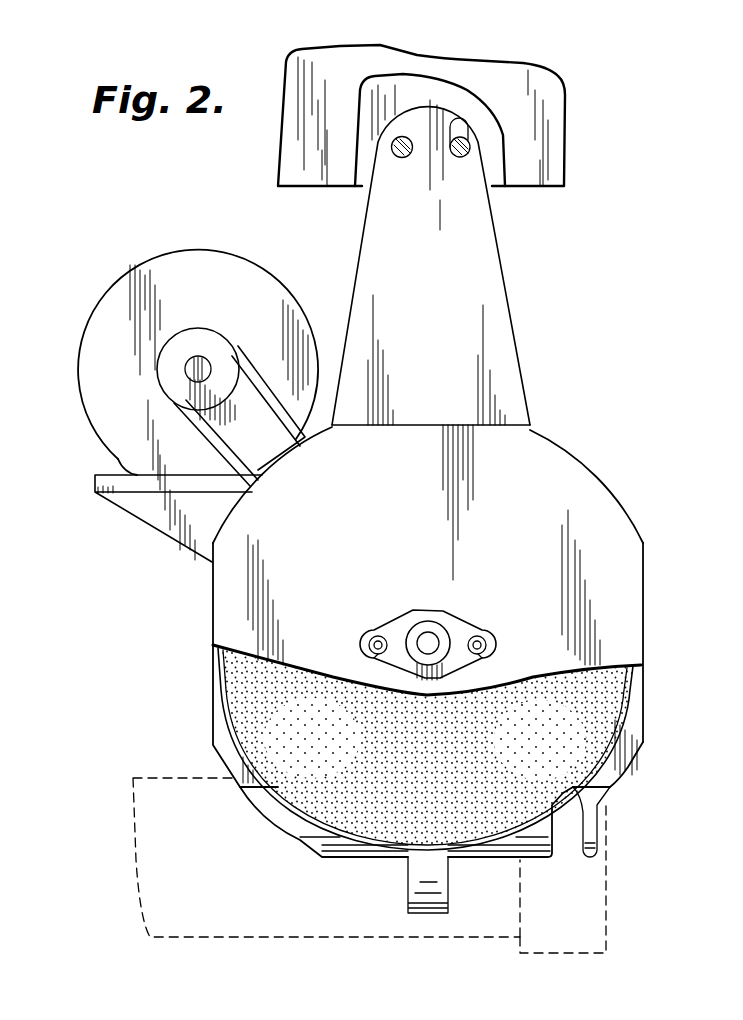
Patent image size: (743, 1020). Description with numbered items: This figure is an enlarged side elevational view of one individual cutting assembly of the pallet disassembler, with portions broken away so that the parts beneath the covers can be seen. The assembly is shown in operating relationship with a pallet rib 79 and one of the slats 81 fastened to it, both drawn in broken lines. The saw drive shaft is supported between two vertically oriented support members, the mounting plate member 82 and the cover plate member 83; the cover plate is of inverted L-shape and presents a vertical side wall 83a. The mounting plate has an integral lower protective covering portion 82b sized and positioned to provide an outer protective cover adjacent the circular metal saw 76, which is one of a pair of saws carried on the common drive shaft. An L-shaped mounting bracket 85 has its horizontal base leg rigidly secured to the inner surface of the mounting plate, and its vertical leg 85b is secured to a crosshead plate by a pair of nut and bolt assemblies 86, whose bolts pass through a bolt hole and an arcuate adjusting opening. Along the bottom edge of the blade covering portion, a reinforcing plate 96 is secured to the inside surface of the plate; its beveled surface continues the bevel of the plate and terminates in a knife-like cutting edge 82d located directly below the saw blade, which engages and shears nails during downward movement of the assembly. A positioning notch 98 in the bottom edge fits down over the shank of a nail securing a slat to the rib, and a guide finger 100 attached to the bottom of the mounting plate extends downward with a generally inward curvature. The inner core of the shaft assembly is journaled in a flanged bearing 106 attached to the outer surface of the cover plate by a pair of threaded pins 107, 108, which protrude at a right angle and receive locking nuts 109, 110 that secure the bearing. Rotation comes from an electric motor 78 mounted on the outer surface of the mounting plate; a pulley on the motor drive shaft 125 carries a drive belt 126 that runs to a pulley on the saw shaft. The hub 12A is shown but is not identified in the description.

The hub 12A is at (172, 378).
The circular metal saw 76 is at (633, 680).
The electric motor 78 is at (270, 290).
The rib 79 is at (606, 880).
The slat 81 is at (172, 773).
The mounting plate member 82 is at (643, 717).
The lower protective covering portion 82b is at (630, 777).
The knife-like cutting edge 82d is at (377, 860).
The cover plate member 83 is at (600, 492).
The vertical side wall 83a is at (603, 603).
The L-shaped mounting bracket 85 is at (485, 258).
The vertical leg 85b is at (518, 357).
The nut and bolt assemblies 86 is at (455, 153).
The reinforcing plate 96 is at (307, 840).
The positioning notch 98 is at (575, 826).
The guide finger 100 is at (448, 900).
The bearing 106 is at (455, 620).
The threaded pin 107 is at (483, 637).
The threaded pin 108 is at (380, 636).
The locking nut 109 is at (483, 655).
The locking nut 110 is at (365, 653).
The drive shaft 125 is at (205, 365).
The drive belt 126 is at (220, 448).